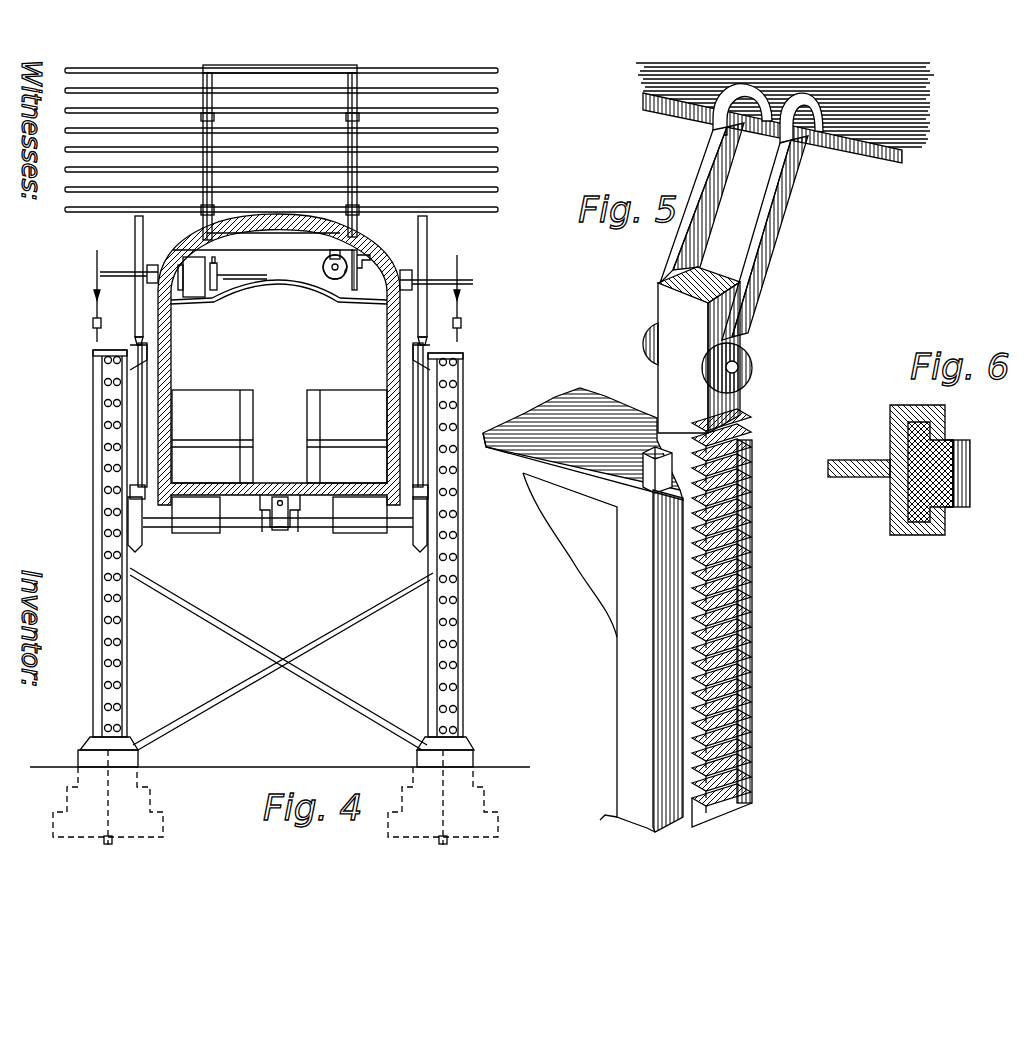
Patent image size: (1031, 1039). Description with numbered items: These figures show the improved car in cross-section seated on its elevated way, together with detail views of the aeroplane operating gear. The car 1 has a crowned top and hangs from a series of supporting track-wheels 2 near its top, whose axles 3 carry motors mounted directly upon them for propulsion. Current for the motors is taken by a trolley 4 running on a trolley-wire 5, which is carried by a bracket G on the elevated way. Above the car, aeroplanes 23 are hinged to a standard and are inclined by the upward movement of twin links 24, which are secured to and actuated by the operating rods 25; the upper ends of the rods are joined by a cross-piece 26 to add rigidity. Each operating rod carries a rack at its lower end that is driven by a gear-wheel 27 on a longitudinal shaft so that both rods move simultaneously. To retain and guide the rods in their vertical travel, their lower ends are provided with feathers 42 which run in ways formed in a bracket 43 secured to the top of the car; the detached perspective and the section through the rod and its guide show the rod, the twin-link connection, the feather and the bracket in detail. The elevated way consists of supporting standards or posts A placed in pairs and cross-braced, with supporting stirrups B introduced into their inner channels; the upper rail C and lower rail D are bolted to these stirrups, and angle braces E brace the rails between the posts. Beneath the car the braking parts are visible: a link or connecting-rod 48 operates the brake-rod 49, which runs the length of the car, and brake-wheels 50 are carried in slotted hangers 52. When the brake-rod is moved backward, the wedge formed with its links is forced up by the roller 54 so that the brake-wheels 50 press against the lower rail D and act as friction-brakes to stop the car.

In FIG. 4, the car 1 is at (260, 429).
In FIG. 4, the supporting track-wheels 2 is at (140, 237).
In FIG. 4, the axles 3 is at (195, 288).
In FIG. 4, the trolley 4 is at (447, 280).
In FIG. 4, the trolley-wire 5 is at (462, 310).
In FIG. 4, the aeroplanes 23 is at (281, 140).
In FIG. 5, the aeroplanes 23 is at (917, 113).
In FIG. 4, the twin links 24 is at (208, 167).
In FIG. 5, the twin links 24 is at (707, 240).
In FIG. 4, the operating rods 25 is at (357, 233).
In FIG. 5, the operating rods 25 is at (678, 387).
In FIG. 6, the operating rods 25 is at (942, 450).
In FIG. 4, the cross-piece 26 is at (280, 142).
In FIG. 4, the gear-wheel 27 is at (322, 272).
In FIG. 5, the feathers 42 is at (618, 440).
In FIG. 6, the feathers 42 is at (920, 520).
In FIG. 4, the bracket 43 is at (355, 276).
In FIG. 5, the bracket 43 is at (630, 563).
In FIG. 6, the bracket 43 is at (900, 525).
In FIG. 4, the link or connecting-rod 48 is at (278, 516).
In FIG. 4, the brake-rod 49 is at (276, 515).
In FIG. 4, the brake-wheels 50 is at (140, 537).
In FIG. 4, the hangers 52 is at (198, 523).
In FIG. 4, the roller 54 is at (303, 511).
In FIG. 4, the supporting standards or posts A is at (95, 463).
In FIG. 4, the supporting stirrups B is at (130, 363).
In FIG. 4, the upper rail C is at (137, 335).
In FIG. 4, the lower rail D is at (138, 492).
In FIG. 4, the angle braces E is at (140, 407).
In FIG. 4, the bracket G is at (427, 340).